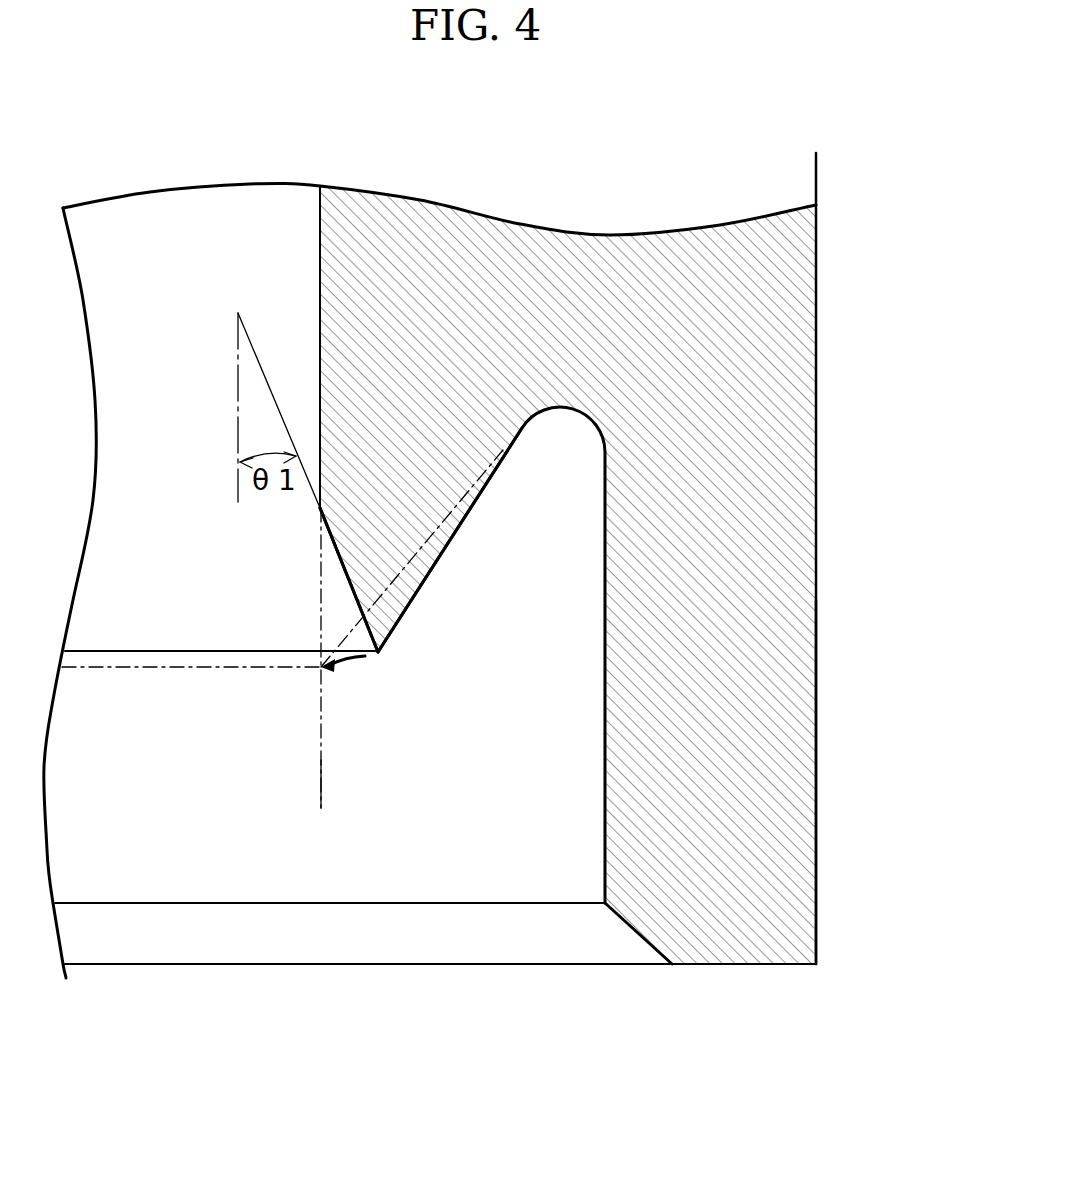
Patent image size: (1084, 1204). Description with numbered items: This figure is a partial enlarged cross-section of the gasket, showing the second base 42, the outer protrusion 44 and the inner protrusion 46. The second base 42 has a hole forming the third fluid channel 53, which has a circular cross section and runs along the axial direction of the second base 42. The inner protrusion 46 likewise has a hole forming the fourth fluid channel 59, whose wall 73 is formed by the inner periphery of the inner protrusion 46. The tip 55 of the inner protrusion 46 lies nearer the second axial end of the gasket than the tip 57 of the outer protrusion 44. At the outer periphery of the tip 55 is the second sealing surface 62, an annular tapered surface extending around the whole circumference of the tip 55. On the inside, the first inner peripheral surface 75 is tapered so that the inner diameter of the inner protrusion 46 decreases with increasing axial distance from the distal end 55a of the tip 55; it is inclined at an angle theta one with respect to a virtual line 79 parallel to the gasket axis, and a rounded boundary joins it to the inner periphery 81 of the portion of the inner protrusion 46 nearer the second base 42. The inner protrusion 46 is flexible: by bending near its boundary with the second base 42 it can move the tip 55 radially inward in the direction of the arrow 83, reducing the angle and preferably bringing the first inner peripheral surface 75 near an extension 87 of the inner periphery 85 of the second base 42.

The second base 42 is at (816, 318).
The outer protrusion 44 is at (816, 683).
The inner protrusion 46 is at (443, 562).
The third fluid channel 53 is at (163, 258).
The tip 55 is at (392, 542).
The distal end 55a is at (380, 655).
The tip 57 is at (731, 964).
The fourth fluid channel 59 is at (171, 591).
The second sealing surface 62 is at (410, 610).
The wall 73 is at (318, 437).
The first inner peripheral surface 75 is at (357, 600).
The virtual line 79 is at (238, 428).
The inner periphery 81 is at (318, 416).
The arrow 83 is at (345, 670).
The inner periphery 85 is at (318, 228).
The extension 87 is at (320, 797).